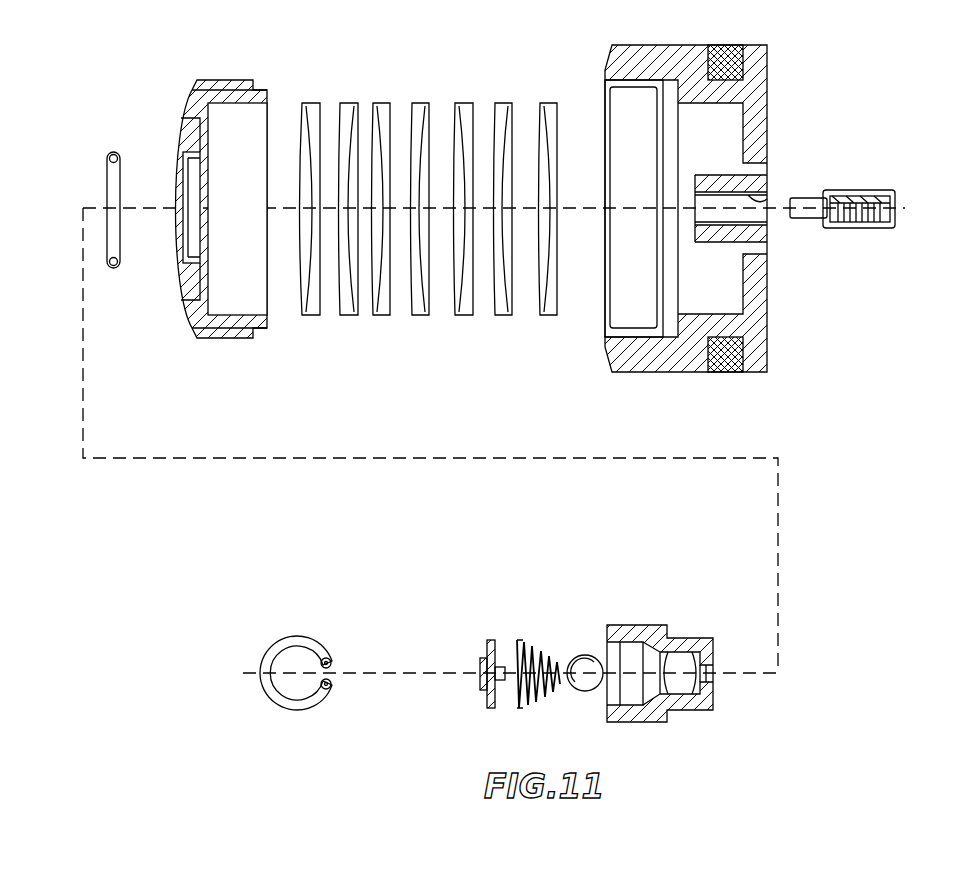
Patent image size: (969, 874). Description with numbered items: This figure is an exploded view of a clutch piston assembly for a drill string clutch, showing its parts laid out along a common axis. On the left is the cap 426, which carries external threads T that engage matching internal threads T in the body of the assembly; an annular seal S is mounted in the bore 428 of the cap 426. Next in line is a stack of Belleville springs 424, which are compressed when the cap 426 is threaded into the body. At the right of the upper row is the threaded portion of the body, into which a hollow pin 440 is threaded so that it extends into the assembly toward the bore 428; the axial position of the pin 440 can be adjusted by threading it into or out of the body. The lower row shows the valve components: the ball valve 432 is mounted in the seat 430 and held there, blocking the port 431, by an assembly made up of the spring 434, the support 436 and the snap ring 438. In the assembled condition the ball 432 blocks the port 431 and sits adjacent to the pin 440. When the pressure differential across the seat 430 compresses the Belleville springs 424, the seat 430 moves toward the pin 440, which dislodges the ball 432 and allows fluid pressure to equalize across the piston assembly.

The Belleville springs 424 is at (385, 103).
The cap 426 is at (177, 186).
The bore 428 is at (187, 237).
The seat 430 is at (732, 686).
The port 431 is at (705, 673).
The ball valve 432 is at (728, 372).
The spring 434 is at (535, 650).
The support 436 is at (487, 645).
The snap ring 438 is at (285, 640).
The hollow pin 440 is at (833, 190).
The annular seal S is at (111, 151).
The threads T is at (221, 80).